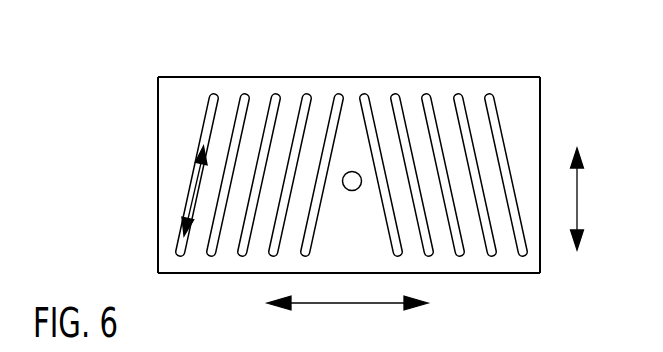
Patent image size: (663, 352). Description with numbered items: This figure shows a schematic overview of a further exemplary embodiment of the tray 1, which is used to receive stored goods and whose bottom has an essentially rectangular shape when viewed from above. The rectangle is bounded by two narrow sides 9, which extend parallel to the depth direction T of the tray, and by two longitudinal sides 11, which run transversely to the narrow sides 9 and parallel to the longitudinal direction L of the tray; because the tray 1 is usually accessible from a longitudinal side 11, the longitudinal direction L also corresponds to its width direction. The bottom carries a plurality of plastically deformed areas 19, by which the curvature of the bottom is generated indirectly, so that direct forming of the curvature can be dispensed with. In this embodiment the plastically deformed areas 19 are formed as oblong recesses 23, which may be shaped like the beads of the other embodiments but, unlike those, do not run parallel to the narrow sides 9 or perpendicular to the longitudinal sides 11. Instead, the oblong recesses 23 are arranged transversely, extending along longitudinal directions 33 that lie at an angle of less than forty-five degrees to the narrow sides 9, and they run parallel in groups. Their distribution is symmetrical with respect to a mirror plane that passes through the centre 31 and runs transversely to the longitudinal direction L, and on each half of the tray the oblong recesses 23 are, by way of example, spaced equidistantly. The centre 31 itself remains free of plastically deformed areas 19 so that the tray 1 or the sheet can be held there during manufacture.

The tray 1 is at (307, 55).
The narrow sides 9 is at (158, 153).
The longitudinal sides 11 is at (409, 77).
The plastically deformed areas 19 is at (190, 143).
The oblong recesses 23 is at (212, 92).
The centre 31 is at (355, 191).
The longitudinal directions 33 is at (192, 191).
The depth direction T is at (577, 195).
The longitudinal direction L is at (347, 305).